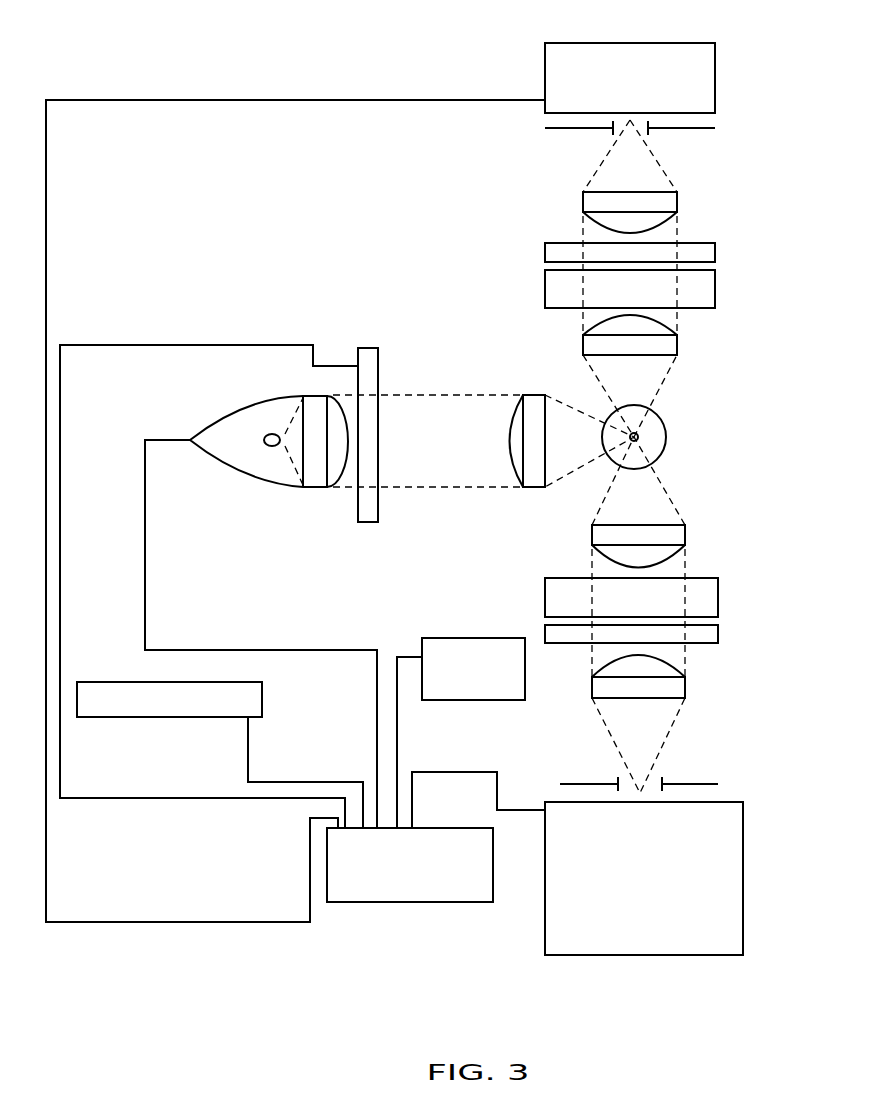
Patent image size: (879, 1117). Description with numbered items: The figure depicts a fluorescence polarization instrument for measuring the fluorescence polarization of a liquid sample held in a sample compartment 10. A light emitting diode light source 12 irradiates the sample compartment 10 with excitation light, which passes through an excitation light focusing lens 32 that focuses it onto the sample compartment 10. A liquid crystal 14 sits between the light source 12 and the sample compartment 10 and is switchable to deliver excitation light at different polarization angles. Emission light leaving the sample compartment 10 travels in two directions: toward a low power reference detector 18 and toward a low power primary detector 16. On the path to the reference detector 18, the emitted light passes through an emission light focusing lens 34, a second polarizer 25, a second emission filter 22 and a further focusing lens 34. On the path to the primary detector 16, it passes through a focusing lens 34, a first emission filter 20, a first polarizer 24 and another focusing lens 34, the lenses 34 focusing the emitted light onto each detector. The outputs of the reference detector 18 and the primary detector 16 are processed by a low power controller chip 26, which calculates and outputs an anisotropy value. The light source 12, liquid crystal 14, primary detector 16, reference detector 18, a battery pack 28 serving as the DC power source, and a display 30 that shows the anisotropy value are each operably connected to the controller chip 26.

The sample compartment 10 is at (666, 437).
The light emitting diode light source 12 is at (272, 485).
The liquid crystal 14 is at (368, 348).
The low power primary detector 16 is at (636, 887).
The low power reference detector 18 is at (621, 90).
The first emission filter 20 is at (718, 585).
The second emission filter 22 is at (715, 290).
The first polarizer 24 is at (718, 640).
The second polarizer 25 is at (715, 252).
The low power controller chip 26 is at (401, 879).
The battery pack 28 is at (161, 712).
The display 30 is at (465, 682).
The excitation light focusing lens 32 is at (532, 487).
The emission light focusing lens 34 is at (677, 204).